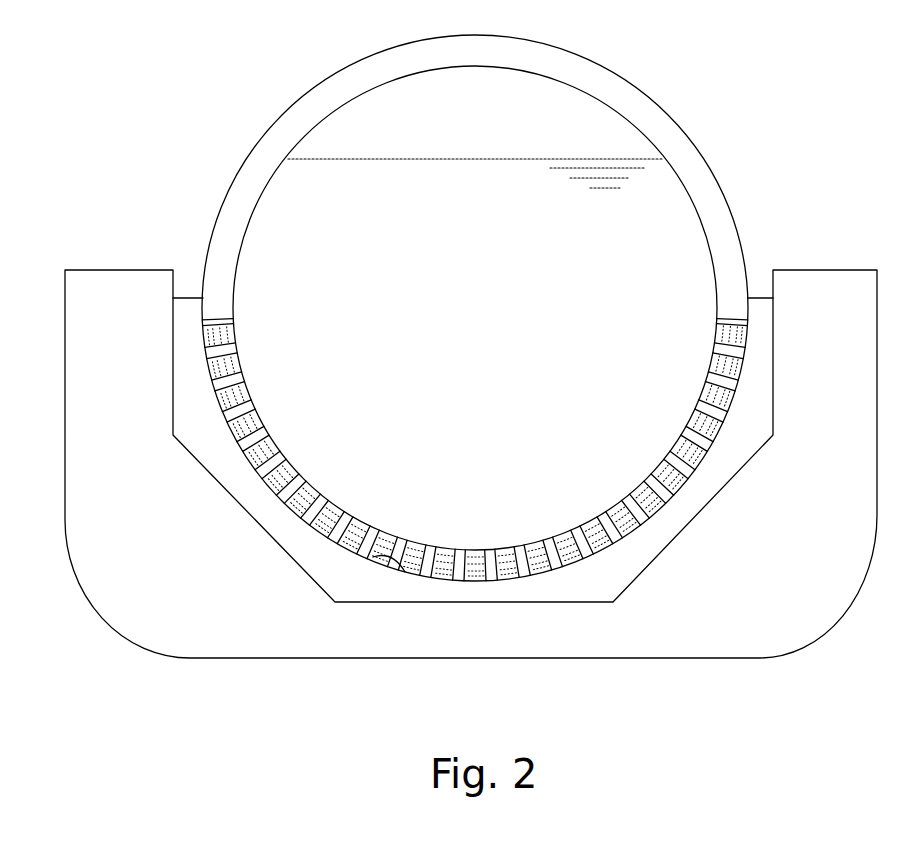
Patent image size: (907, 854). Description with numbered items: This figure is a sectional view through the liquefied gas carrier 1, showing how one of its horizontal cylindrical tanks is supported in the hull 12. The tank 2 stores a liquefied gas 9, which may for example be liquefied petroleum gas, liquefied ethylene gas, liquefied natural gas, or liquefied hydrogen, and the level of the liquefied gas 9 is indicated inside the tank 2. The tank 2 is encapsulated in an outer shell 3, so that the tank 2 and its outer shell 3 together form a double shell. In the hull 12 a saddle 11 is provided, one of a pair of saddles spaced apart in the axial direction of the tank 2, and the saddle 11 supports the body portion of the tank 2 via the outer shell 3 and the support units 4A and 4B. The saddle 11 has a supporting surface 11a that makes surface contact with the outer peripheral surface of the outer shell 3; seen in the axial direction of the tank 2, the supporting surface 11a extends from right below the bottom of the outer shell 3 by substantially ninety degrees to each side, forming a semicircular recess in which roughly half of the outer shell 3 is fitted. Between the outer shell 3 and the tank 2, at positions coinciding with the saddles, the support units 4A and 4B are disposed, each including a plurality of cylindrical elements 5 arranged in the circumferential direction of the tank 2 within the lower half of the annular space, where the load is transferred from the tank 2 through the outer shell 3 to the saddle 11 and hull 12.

The liquefied gas carrier 1 is at (840, 163).
The tank 2 is at (649, 137).
The outer shell 3 is at (630, 80).
The first support unit 4A is at (218, 290).
The second support unit 4B is at (732, 319).
The cylindrical elements 5 is at (507, 545).
The liquefied gas 9 is at (650, 240).
The saddle 11 is at (185, 315).
The supporting surface 11a is at (405, 572).
The hull 12 is at (850, 300).